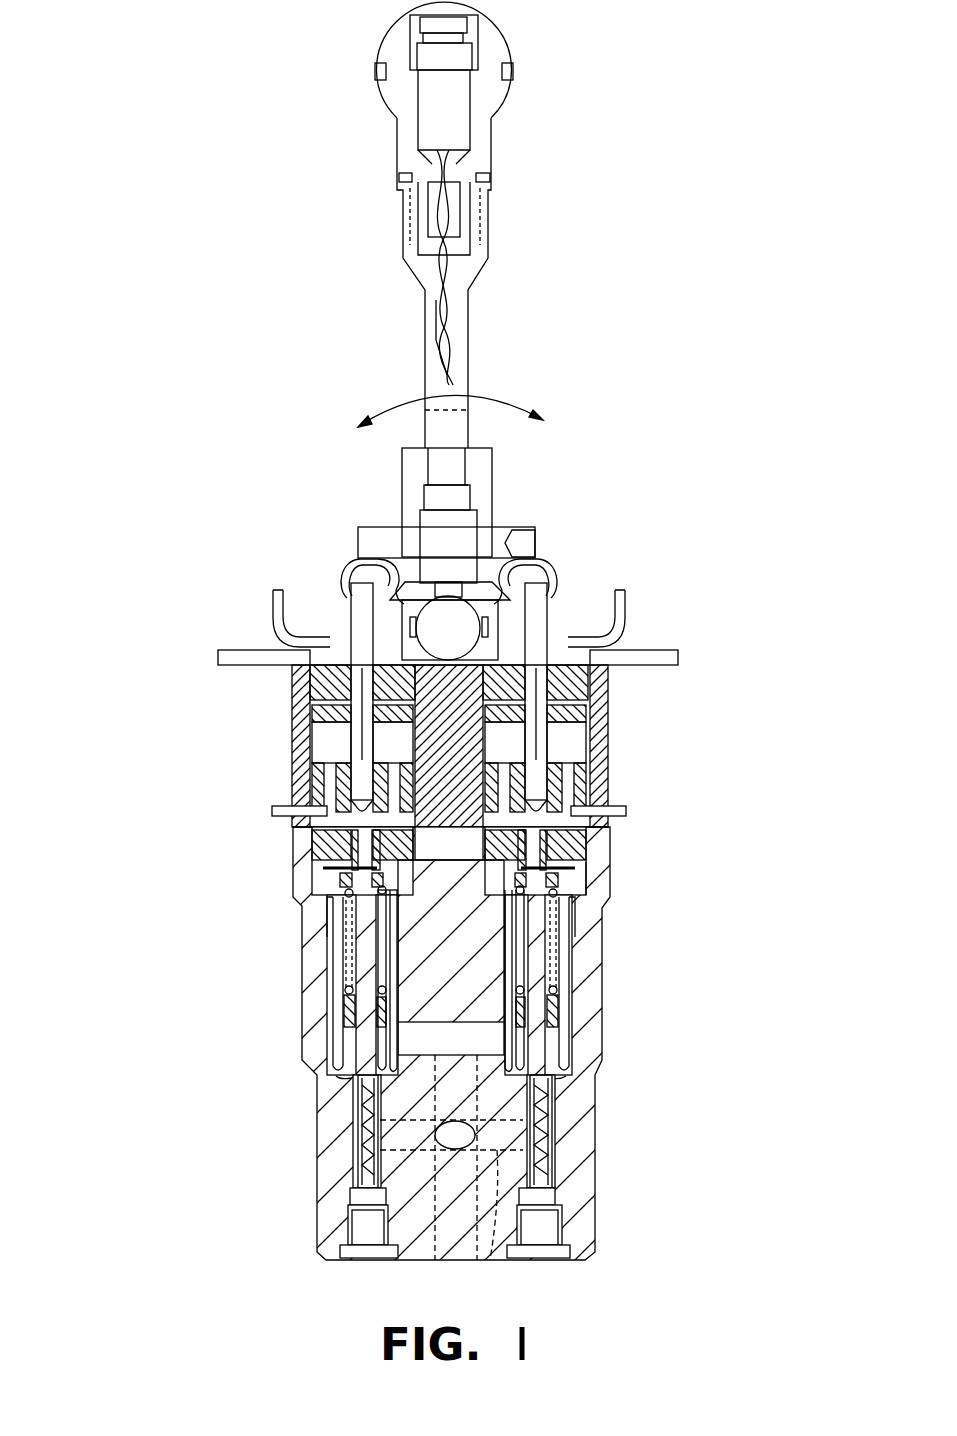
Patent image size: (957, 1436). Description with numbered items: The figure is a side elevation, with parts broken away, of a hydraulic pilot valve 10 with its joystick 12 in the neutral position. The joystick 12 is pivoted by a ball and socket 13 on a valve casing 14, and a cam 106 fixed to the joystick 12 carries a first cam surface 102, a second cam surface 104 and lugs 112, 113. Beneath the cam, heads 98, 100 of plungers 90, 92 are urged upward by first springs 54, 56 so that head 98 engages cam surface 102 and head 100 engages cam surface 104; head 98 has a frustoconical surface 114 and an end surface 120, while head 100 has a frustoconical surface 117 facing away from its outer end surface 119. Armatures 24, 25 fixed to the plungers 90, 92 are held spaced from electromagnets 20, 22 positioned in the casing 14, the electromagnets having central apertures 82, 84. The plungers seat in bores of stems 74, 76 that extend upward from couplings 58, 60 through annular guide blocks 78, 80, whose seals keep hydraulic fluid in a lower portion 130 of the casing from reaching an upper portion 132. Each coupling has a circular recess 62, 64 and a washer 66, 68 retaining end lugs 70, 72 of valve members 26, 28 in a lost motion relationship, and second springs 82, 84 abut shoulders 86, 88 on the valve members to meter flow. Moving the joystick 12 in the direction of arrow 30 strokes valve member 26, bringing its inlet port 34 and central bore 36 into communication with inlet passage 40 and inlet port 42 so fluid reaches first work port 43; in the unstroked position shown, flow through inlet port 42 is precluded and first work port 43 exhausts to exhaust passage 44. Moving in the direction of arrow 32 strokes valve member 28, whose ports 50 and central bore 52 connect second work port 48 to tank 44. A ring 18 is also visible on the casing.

The pilot valve 10 is at (566, 627).
The joystick 12 is at (474, 300).
The ball and socket 13 is at (428, 636).
The valve casing 14 is at (292, 683).
The retaining ring 18 is at (272, 808).
The electromagnet 20 is at (585, 770).
The electromagnet 22 is at (322, 775).
The armature 24 is at (568, 725).
The armature 25 is at (318, 716).
The valve member 26 is at (528, 1045).
The valve member 28 is at (372, 1045).
The arrow 30 is at (503, 400).
The arrow 32 is at (395, 400).
The inlet port 34 is at (563, 1092).
The central bore 36 is at (540, 1133).
The inlet passage 40 is at (490, 1262).
The inlet port 42 is at (453, 1140).
The first work port 43 is at (530, 1233).
The exhaust passage 44 is at (433, 1053).
The second work port 48 is at (368, 1233).
The ports 50 is at (350, 1092).
The central bore 52 is at (366, 1133).
The first spring 54 is at (565, 920).
The first spring 56 is at (337, 925).
The coupling 58 is at (572, 893).
The coupling 60 is at (338, 890).
The circular recess 62 is at (585, 862).
The circular recess 64 is at (325, 898).
The washer 66 is at (505, 888).
The washer 68 is at (385, 905).
The end lug 70 is at (600, 876).
The end lug 72 is at (335, 862).
The stem 74 is at (518, 758).
The stem 76 is at (380, 758).
The annular guide block 78 is at (590, 834).
The annular guide block 80 is at (322, 842).
The second spring 82 is at (556, 758).
The second spring 84 is at (342, 758).
The shoulder 86 is at (555, 1012).
The shoulder 88 is at (345, 1015).
The plunger 90 is at (547, 592).
The plunger 92 is at (345, 592).
The head 98 is at (538, 560).
The head 100 is at (345, 572).
The first cam surface 102 is at (556, 603).
The second cam surface 104 is at (375, 592).
The cam 106 is at (392, 530).
The lug 112 is at (507, 513).
The lug 113 is at (385, 612).
The frustoconical surface 114 is at (560, 568).
The frustoconical surface 117 is at (349, 585).
The outer end surface 119 is at (352, 558).
The end surface 120 is at (545, 565).
The lower portion 130 is at (580, 1190).
The upper portion 132 is at (610, 683).